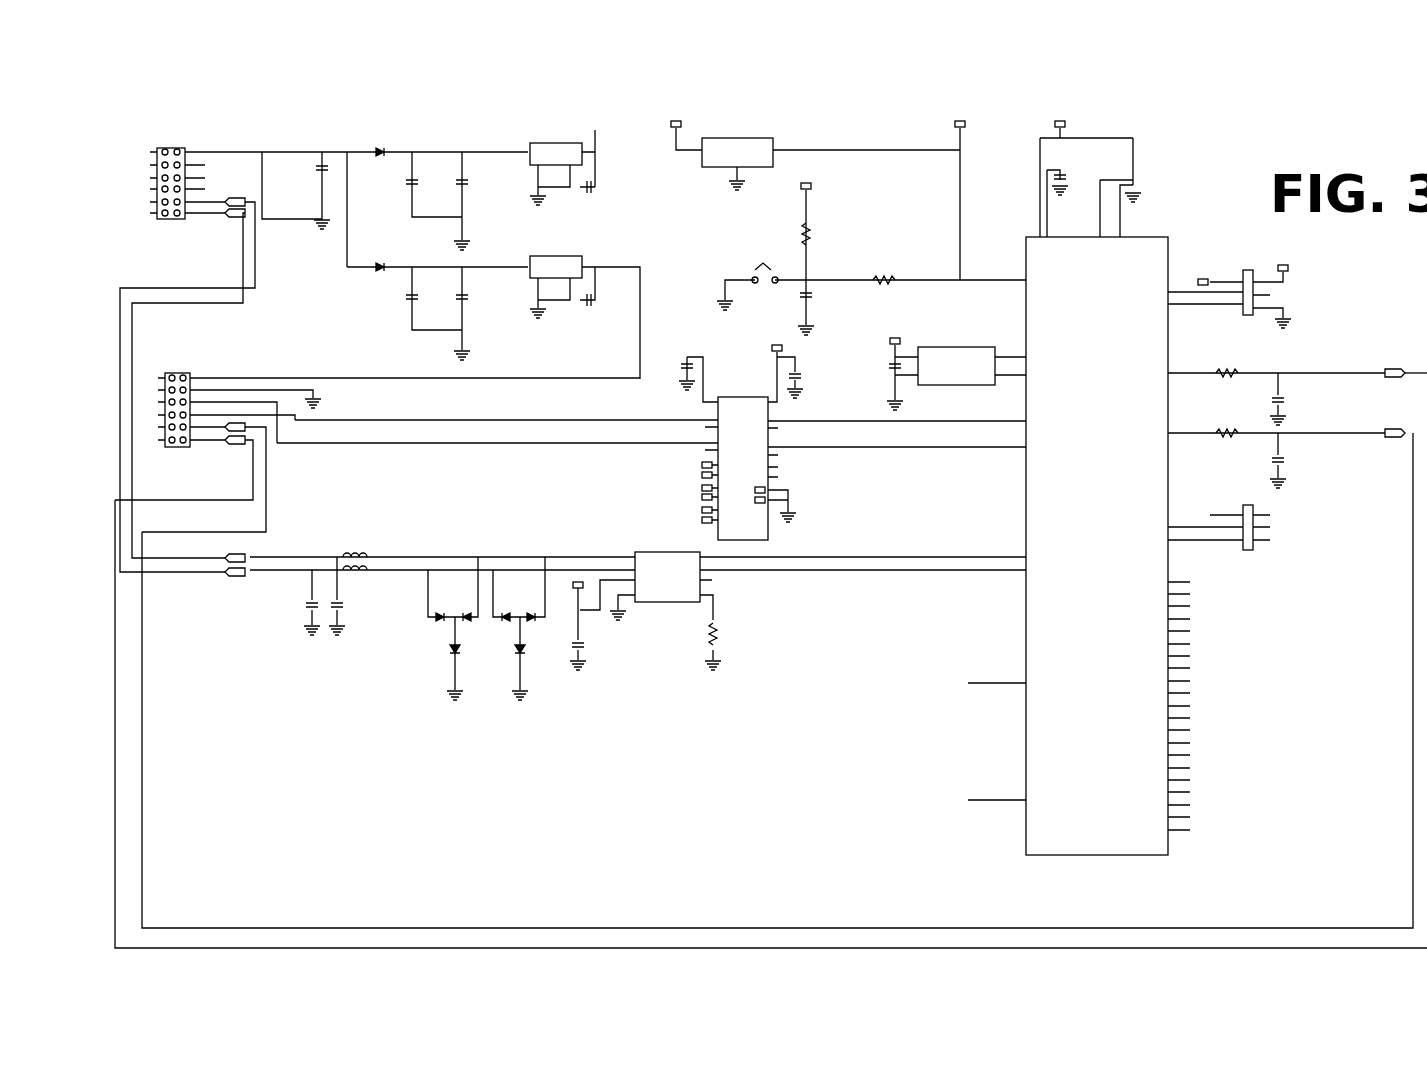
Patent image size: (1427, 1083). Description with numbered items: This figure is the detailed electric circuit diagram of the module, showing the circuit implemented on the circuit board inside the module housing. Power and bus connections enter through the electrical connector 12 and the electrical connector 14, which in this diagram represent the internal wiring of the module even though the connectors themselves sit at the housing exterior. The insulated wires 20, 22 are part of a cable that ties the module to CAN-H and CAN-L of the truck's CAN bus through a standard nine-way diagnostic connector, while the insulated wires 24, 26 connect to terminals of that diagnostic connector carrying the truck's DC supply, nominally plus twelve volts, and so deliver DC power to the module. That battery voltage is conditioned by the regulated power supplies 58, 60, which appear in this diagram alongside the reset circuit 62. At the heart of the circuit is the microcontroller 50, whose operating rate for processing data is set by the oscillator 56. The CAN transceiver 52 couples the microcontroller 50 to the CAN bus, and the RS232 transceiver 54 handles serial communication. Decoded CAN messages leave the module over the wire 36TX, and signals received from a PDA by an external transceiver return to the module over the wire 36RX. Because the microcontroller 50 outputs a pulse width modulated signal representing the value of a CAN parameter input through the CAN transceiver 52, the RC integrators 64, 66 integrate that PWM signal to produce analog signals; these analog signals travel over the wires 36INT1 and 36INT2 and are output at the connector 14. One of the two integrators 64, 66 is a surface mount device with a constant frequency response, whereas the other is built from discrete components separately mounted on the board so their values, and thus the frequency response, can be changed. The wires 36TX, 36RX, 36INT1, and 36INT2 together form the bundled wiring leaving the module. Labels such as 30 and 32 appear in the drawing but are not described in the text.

The electrical connector 12 is at (190, 143).
The electrical connector 14 is at (190, 372).
The insulated wire 20 is at (255, 286).
The insulated wire 22 is at (242, 252).
The insulated wire 24 is at (268, 148).
The insulated wire 26 is at (285, 222).
The 5V supply line 30 is at (278, 378).
The ground 32 is at (316, 401).
The wire 36TX is at (418, 420).
The wire 36RX is at (418, 444).
The wire 36INT1 is at (506, 928).
The wire 36INT2 is at (577, 948).
The microcontroller 50 is at (1024, 858).
The CAN transceiver 52 is at (681, 548).
The RS232 transceiver 54 is at (774, 540).
The oscillator 56 is at (990, 345).
The regulated power supply 58 is at (568, 140).
The regulated power supply 60 is at (594, 258).
The reset circuit 62 is at (788, 223).
The RC integrator 64 is at (1282, 368).
The RC integrator 66 is at (1300, 482).